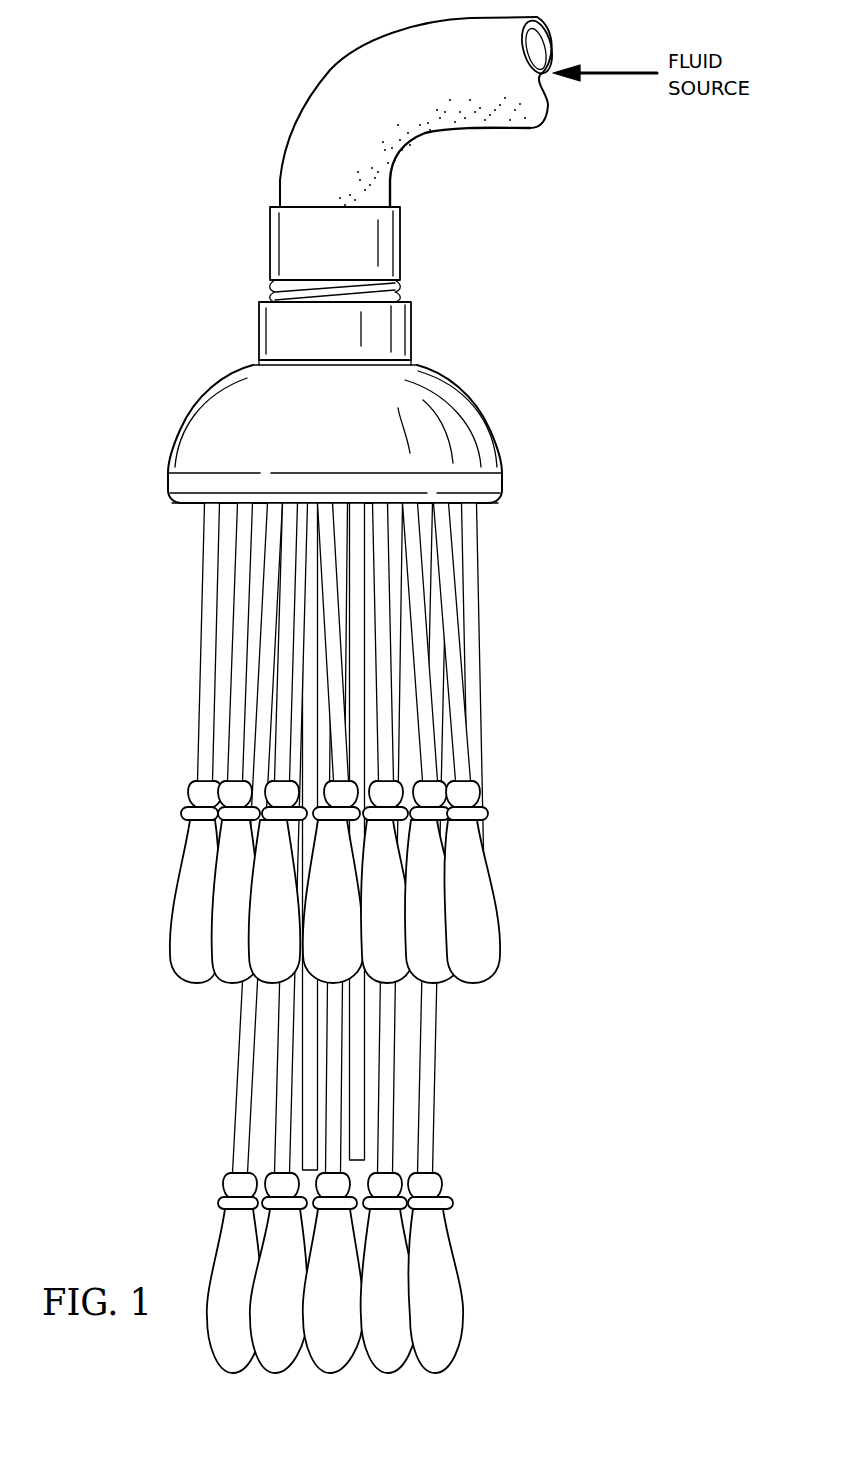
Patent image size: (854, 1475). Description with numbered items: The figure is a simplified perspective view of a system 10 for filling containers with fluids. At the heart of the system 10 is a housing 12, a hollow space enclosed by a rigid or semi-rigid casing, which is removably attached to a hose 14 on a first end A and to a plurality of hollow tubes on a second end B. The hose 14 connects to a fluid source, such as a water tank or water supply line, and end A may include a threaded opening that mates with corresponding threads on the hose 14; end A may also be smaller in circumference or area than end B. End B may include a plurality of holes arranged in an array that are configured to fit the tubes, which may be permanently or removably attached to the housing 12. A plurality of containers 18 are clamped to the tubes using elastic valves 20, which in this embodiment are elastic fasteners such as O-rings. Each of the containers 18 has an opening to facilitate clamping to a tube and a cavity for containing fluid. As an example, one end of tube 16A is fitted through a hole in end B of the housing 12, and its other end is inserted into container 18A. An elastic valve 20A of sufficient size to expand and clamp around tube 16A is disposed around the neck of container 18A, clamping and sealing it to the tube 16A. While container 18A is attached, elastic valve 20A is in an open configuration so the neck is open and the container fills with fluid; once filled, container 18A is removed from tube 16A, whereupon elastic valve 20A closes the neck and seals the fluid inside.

The system 10 is at (128, 226).
The housing 12 is at (213, 388).
The hose 14 is at (295, 125).
The tube 16A is at (204, 636).
The containers 18 is at (510, 889).
The container 18A is at (171, 930).
The elastic valves 20 is at (502, 813).
The elastic valve 20A is at (183, 812).
The first end A is at (306, 290).
The second end B is at (483, 515).